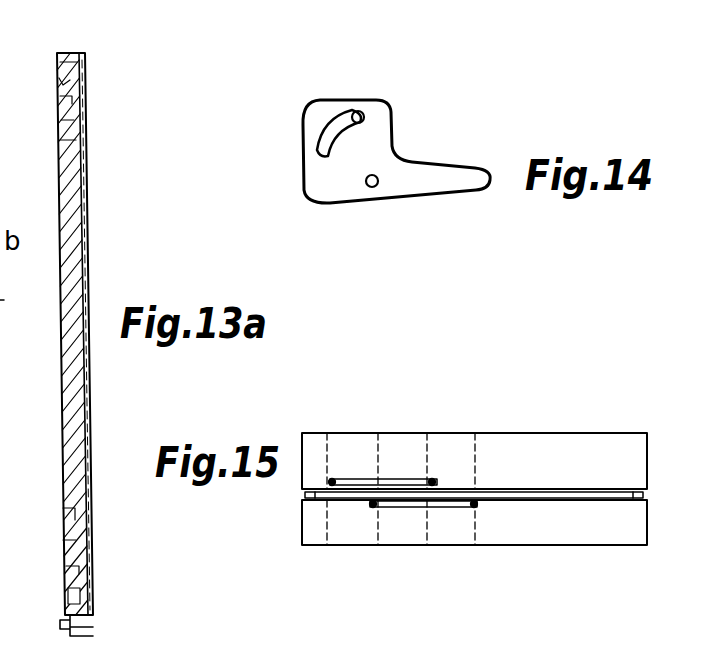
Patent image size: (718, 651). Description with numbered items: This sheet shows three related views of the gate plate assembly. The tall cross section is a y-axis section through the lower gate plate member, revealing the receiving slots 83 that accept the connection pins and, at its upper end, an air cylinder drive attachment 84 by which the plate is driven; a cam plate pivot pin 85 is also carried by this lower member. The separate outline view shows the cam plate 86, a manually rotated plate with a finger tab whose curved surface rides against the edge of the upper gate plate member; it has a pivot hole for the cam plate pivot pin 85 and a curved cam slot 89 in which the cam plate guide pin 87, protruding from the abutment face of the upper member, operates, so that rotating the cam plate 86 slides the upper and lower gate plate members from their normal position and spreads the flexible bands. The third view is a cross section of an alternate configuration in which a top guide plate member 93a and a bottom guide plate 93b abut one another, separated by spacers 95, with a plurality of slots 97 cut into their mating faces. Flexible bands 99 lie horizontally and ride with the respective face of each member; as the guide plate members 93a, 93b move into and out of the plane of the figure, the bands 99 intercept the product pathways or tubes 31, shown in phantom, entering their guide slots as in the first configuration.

In FIG. 13A, the air cylinder drive attachment 84 is at (69, 53).
In FIG. 13A, the receiving slots for the connection pins 83 is at (57, 95).
In FIG. 13A, the cam plate pivot pin 85 is at (60, 625).
In FIG. 14, the cam plate pivot pin 85 is at (372, 188).
In FIG. 14, the cam plate 86 is at (445, 166).
In FIG. 14, the cam plate guide pin 87 is at (367, 112).
In FIG. 14, the curved cam slot 89 is at (337, 117).
In FIG. 15, the top guide plate member 93a is at (568, 432).
In FIG. 15, the bottom guide plate 93b is at (577, 547).
In FIG. 15, the spacers 95 is at (305, 494).
In FIG. 15, the slots 97 is at (332, 478).
In FIG. 15, the flexible bands 99 is at (400, 478).
In FIG. 15, the product pathways or tubes 31 is at (472, 474).